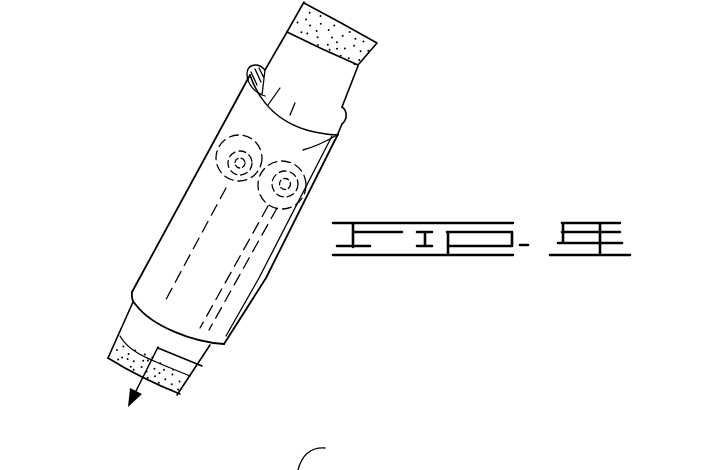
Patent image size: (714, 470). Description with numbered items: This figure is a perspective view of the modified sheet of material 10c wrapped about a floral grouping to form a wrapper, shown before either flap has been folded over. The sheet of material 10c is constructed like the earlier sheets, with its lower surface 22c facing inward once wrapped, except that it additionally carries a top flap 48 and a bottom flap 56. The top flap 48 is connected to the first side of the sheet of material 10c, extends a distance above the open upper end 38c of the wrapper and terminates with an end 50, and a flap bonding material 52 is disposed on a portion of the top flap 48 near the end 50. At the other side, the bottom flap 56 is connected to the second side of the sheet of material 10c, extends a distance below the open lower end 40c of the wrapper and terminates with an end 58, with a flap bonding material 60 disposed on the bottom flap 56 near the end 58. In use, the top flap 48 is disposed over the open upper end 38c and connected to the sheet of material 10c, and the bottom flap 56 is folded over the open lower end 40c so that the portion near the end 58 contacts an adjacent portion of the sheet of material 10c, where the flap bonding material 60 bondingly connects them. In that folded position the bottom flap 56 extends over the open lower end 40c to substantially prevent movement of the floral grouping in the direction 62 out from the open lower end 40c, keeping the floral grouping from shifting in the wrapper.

The sheet of material 10c is at (188, 183).
The lower surface 22c is at (342, 136).
The open upper end 38c is at (263, 72).
The open lower end 40c is at (148, 322).
The top flap 48 is at (330, 90).
The end 50 is at (363, 28).
The flap bonding material 52 is at (375, 48).
The bottom flap 56 is at (180, 342).
The end 58 is at (157, 388).
The flap bonding material 60 is at (170, 377).
The direction 62 is at (130, 386).